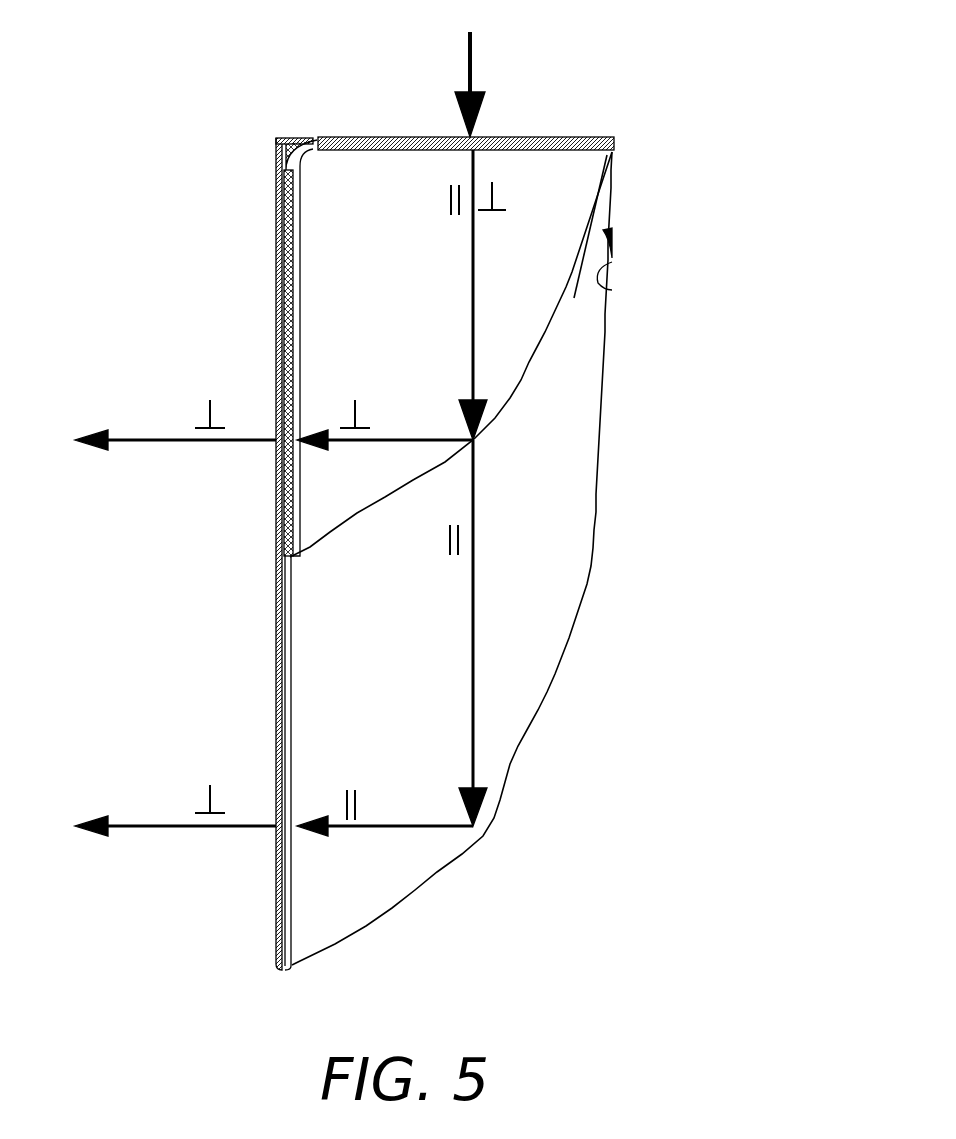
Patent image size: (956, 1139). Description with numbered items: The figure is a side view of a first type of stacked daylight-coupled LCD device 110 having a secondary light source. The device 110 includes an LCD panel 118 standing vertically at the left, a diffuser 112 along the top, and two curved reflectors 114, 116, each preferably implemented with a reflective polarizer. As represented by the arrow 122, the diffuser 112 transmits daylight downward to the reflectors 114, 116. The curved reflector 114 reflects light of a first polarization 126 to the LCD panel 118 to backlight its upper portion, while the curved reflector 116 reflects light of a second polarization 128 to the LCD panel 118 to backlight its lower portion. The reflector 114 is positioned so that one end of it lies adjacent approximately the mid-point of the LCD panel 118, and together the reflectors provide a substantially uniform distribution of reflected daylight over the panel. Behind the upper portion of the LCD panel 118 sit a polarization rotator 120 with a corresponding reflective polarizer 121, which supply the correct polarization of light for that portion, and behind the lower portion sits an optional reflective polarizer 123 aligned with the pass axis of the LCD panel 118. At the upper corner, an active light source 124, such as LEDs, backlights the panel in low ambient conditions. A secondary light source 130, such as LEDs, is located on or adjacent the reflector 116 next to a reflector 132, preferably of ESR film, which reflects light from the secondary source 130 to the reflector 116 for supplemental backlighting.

The daylight-coupled LCD device 110 is at (635, 44).
The diffuser 112 is at (560, 137).
The curved reflector 114 is at (518, 385).
The curved reflector 116 is at (573, 626).
The LCD panel 118 is at (276, 638).
The polarization rotator 120 is at (290, 305).
The reflective polarizer 121 is at (302, 240).
The arrow representing daylight 122 is at (468, 53).
The reflective polarizer 123 is at (291, 690).
The active light source 124 is at (285, 143).
The light of a first polarization 126 is at (415, 440).
The light of a second polarization 128 is at (415, 826).
The secondary light source 130 is at (612, 283).
The reflector 132 is at (583, 266).